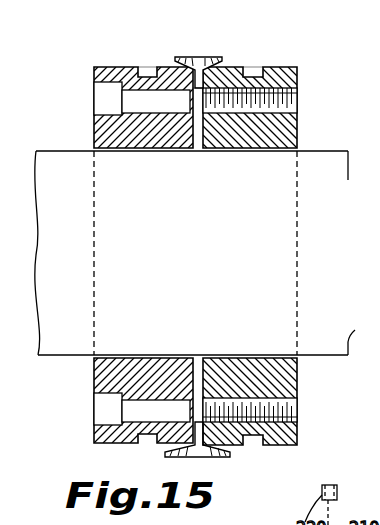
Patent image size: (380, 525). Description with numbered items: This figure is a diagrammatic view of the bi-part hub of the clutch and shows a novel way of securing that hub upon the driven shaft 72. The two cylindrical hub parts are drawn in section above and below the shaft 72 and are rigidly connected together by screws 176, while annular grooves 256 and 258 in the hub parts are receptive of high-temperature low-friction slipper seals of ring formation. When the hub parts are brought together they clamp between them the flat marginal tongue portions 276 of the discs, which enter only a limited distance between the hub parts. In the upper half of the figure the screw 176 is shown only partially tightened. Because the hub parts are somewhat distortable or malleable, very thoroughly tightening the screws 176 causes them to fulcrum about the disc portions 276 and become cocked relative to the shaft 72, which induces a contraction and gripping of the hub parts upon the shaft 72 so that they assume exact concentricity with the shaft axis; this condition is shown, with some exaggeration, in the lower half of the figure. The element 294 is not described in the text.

The driven shaft 72 is at (337, 165).
The screws 176 is at (162, 95).
The annular groove 256 is at (147, 76).
The annular groove 258 is at (258, 52).
The flat marginal tongue portions 276 is at (199, 88).
The component 294 is at (338, 494).